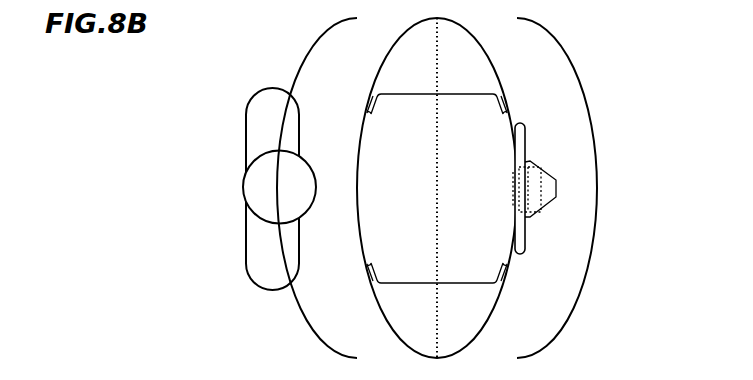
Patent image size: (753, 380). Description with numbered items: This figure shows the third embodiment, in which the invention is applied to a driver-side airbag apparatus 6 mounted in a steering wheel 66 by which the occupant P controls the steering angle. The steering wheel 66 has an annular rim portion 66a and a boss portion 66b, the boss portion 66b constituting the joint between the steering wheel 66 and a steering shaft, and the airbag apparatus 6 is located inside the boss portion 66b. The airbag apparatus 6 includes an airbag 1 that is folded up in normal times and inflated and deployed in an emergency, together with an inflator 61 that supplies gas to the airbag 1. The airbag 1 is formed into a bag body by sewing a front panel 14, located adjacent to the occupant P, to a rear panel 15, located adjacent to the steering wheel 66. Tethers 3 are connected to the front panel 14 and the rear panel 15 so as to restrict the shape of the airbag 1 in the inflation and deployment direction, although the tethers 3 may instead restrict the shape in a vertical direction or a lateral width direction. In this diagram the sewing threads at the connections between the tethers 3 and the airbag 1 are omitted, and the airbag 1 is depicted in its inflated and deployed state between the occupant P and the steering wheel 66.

The airbag 1 is at (346, 97).
The tethers 3 is at (405, 96).
The front panel 14 is at (390, 50).
The rear panel 15 is at (484, 50).
The airbag apparatus 6 is at (558, 86).
The steering wheel 66 is at (545, 156).
The rim portion 66a is at (526, 240).
The boss portion 66b is at (558, 186).
The inflator 61 is at (540, 200).
The occupant P is at (273, 196).